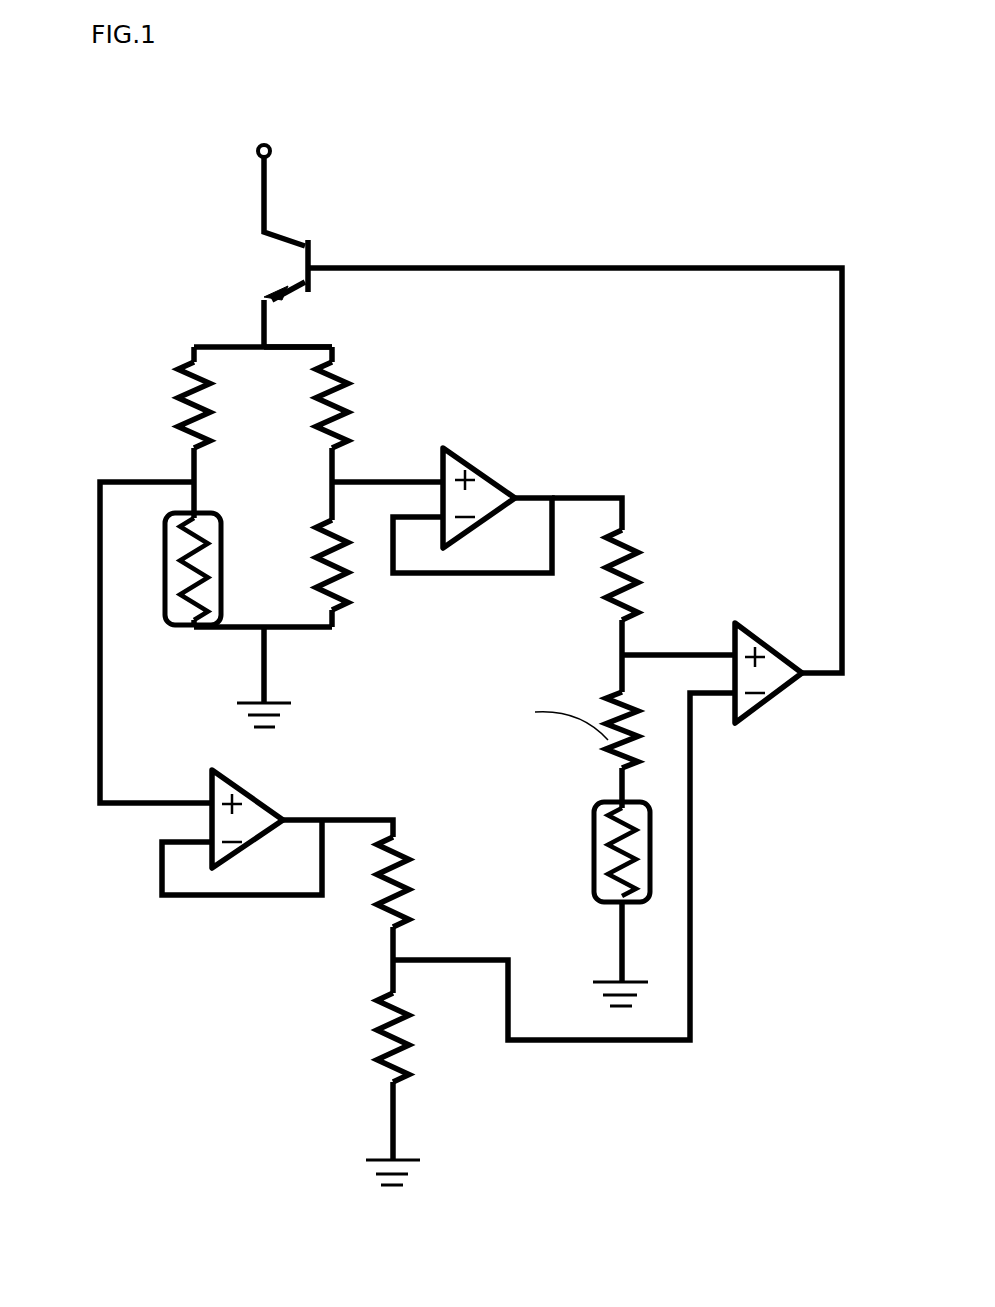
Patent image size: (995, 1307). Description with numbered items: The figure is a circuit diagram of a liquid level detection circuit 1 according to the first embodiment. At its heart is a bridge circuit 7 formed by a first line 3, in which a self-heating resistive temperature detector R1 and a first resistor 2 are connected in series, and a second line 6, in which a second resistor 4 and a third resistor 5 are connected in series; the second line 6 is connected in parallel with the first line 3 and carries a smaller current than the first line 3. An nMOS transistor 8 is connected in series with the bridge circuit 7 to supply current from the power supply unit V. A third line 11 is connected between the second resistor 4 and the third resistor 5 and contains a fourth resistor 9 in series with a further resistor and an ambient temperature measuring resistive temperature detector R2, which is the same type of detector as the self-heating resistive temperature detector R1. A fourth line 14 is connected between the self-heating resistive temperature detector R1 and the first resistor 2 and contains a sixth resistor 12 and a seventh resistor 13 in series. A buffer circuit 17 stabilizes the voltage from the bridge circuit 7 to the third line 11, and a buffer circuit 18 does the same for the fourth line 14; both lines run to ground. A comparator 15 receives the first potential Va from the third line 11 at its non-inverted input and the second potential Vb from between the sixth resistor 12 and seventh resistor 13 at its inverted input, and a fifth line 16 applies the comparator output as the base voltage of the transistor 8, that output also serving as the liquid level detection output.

The liquid level detection circuit 1 is at (670, 137).
The first resistor 2 is at (180, 360).
The first line 3 is at (212, 345).
The second resistor 4 is at (338, 380).
The third resistor 5 is at (345, 588).
The second line 6 is at (305, 345).
The bridge circuit 7 is at (150, 438).
The nMOS transistor 8 is at (302, 215).
The fourth resistor 9 is at (632, 545).
The third line 11 is at (576, 496).
The sixth resistor 12 is at (400, 850).
The seventh resistor 13 is at (382, 1045).
The fourth line 14 is at (100, 758).
The comparator 15 is at (778, 700).
The fifth line 16 is at (840, 372).
The buffer circuit 17 is at (497, 460).
The buffer circuit 18 is at (287, 793).
The self-heating resistive temperature detector R1 is at (180, 575).
The ambient temperature measuring resistive temperature detector R2 is at (605, 845).